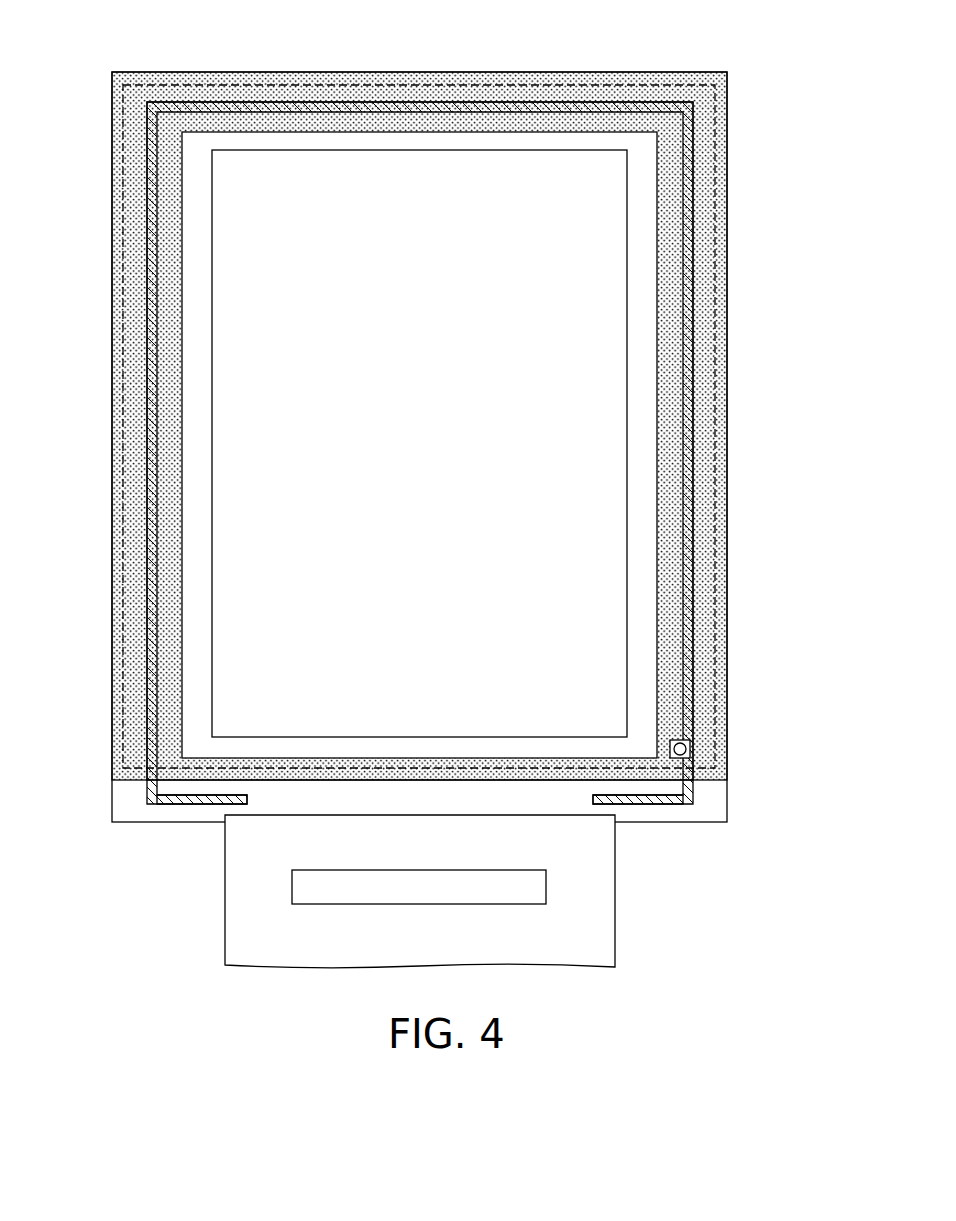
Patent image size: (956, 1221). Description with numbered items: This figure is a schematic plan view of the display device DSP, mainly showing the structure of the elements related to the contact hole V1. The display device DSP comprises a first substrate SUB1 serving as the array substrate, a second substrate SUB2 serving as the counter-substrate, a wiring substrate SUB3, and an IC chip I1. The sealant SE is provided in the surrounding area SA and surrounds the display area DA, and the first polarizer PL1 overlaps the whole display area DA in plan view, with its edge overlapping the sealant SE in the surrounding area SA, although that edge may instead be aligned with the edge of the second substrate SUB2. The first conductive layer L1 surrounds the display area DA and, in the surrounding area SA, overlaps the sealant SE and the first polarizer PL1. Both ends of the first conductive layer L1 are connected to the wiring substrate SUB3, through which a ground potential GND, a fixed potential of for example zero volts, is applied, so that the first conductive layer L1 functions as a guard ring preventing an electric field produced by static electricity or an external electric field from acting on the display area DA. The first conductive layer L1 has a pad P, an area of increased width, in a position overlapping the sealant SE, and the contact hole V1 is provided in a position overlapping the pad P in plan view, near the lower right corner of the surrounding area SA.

The display device DSP is at (413, 445).
The first substrate SUB1 is at (125, 823).
The second substrate SUB2 is at (128, 782).
The wiring substrate SUB3 is at (617, 893).
The first polarizer PL1 is at (716, 352).
The sealant SE is at (702, 455).
The first conductive layer L1 is at (686, 569).
The surrounding area SA is at (593, 148).
The display area DA is at (525, 173).
The pad P is at (672, 743).
The contact hole V1 is at (690, 749).
The ground potential GND is at (420, 817).
The IC chip I1 is at (457, 870).